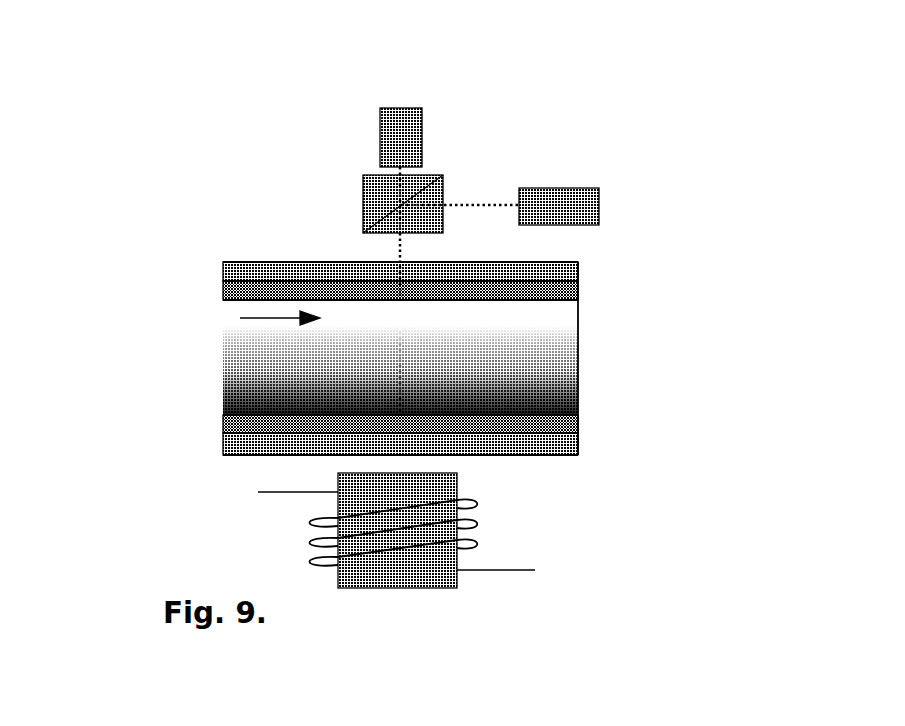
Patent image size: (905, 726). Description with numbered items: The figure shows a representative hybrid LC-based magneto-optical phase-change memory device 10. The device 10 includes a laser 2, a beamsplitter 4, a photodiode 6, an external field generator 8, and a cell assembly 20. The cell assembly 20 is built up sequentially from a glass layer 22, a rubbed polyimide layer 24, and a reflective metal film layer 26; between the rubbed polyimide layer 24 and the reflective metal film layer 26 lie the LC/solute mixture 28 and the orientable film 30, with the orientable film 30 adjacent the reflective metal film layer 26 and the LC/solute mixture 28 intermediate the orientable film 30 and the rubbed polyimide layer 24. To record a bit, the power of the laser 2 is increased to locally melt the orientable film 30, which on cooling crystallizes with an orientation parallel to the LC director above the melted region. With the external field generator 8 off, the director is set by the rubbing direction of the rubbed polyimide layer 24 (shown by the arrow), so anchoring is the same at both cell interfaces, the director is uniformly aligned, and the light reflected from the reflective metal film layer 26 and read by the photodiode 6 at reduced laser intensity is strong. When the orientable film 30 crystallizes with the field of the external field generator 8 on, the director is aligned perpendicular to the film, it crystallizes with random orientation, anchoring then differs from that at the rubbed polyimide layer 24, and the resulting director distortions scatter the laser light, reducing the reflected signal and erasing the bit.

The device 10 is at (137, 178).
The laser 2 is at (388, 132).
The beamsplitter 4 is at (373, 188).
The photodiode 6 is at (590, 207).
The cell assembly 20 is at (202, 263).
The glass layer 22 is at (563, 273).
The rubbed polyimide layer 24 is at (552, 292).
The LC/solute mixture 28 is at (550, 363).
The orientable film 30 is at (550, 427).
The reflective metal film layer 26 is at (545, 450).
The external field generator 8 is at (405, 575).